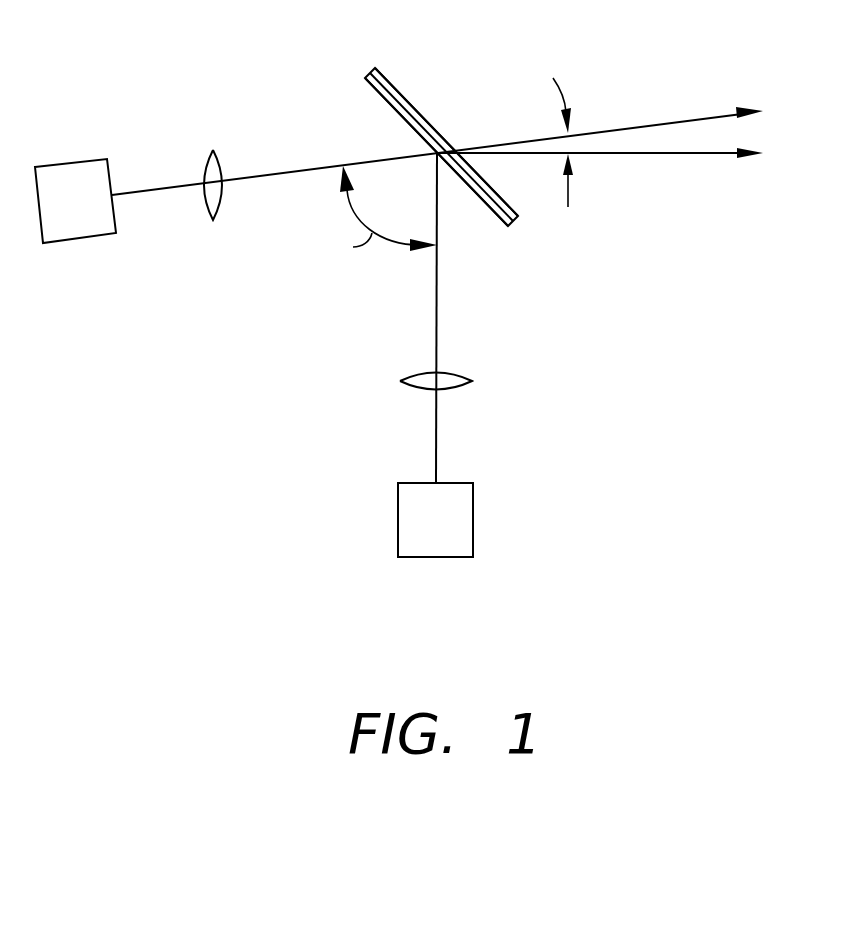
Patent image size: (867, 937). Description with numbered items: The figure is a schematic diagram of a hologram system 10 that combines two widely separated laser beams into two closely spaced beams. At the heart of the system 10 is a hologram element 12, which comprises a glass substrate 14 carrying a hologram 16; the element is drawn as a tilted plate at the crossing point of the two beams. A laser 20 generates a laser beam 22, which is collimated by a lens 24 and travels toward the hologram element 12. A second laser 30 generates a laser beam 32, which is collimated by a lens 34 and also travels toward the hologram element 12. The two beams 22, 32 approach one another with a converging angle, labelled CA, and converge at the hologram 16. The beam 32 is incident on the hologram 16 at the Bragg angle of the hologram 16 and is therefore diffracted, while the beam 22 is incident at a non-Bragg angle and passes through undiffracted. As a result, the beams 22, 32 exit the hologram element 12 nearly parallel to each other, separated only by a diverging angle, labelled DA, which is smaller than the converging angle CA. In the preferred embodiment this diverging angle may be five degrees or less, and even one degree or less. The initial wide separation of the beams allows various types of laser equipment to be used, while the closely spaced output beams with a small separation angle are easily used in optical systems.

The hologram system 10 is at (274, 356).
The hologram element 12 is at (380, 68).
The glass substrate 14 is at (410, 102).
The hologram 16 is at (381, 97).
The laser 20 is at (70, 162).
The laser beam 22 is at (143, 190).
The lens 24 is at (208, 150).
The laser 30 is at (398, 502).
The laser beam 32 is at (698, 156).
The lens 34 is at (413, 387).